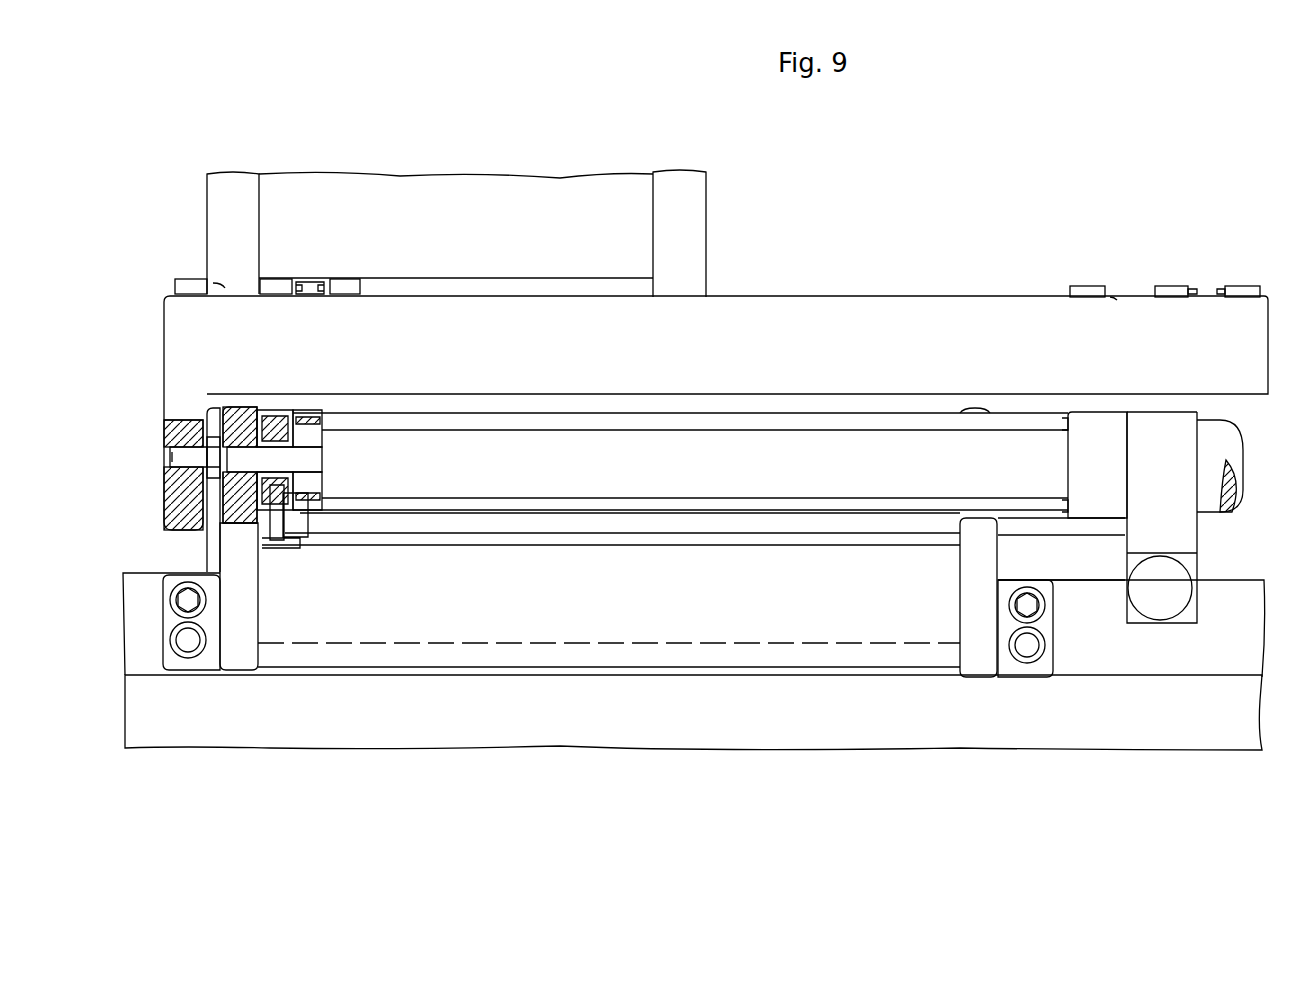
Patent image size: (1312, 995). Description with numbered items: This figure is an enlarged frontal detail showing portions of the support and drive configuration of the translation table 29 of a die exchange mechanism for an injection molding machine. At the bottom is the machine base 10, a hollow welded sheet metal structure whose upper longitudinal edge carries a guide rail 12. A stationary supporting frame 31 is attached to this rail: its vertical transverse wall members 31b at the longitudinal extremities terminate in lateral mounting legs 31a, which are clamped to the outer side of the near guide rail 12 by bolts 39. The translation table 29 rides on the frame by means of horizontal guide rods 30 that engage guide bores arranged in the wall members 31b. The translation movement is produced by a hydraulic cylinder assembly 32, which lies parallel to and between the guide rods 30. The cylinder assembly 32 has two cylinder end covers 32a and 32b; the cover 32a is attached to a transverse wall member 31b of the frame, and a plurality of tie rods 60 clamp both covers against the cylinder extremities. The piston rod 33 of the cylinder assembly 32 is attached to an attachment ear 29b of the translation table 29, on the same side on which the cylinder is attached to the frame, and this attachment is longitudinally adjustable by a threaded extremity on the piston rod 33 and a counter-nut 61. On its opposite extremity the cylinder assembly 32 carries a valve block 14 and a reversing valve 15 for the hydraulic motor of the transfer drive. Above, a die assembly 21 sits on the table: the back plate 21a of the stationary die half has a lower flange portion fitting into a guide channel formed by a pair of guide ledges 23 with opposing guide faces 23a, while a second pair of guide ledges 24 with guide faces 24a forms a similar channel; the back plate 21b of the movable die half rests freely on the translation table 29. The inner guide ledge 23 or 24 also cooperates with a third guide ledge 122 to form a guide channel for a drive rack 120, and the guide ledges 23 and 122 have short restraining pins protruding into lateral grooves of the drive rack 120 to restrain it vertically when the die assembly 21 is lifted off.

The machine base 10 is at (1220, 728).
The guide rail 12 is at (1230, 660).
The valve block 14 is at (1176, 528).
The reversing valve 15 is at (1155, 590).
The die assembly 21 is at (707, 243).
The back plate 21a is at (231, 190).
The back plate 21b is at (680, 190).
The guide ledge 23 is at (195, 290).
The guide face 23a is at (213, 283).
The guide ledge 24 is at (1172, 288).
The guide face 24a is at (1118, 300).
The translation table 29 is at (985, 298).
The attachment ear 29b is at (172, 498).
The guide rod 30 is at (1210, 480).
The supporting frame 31 is at (587, 678).
The mounting leg 31a is at (170, 605).
The wall member 31b is at (240, 605).
The hydraulic cylinder assembly 32 is at (1048, 476).
The cylinder end cover 32a is at (280, 410).
The cylinder end cover 32b is at (1115, 437).
The piston rod 33 is at (213, 525).
The bolt 39 is at (1025, 600).
The tie rod 60 is at (718, 505).
The counter-nut 61 is at (196, 432).
The drive rack 120 is at (314, 290).
The third guide ledge 122 is at (346, 290).